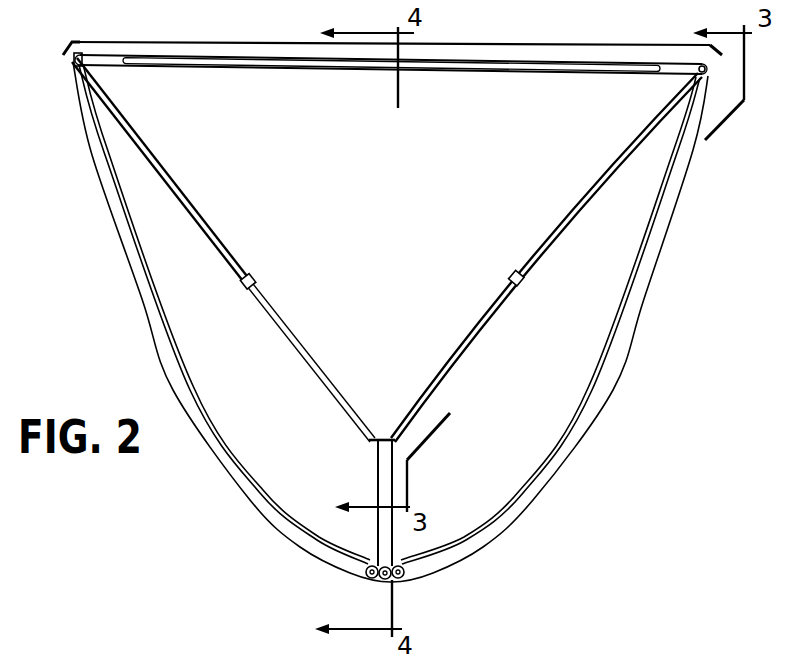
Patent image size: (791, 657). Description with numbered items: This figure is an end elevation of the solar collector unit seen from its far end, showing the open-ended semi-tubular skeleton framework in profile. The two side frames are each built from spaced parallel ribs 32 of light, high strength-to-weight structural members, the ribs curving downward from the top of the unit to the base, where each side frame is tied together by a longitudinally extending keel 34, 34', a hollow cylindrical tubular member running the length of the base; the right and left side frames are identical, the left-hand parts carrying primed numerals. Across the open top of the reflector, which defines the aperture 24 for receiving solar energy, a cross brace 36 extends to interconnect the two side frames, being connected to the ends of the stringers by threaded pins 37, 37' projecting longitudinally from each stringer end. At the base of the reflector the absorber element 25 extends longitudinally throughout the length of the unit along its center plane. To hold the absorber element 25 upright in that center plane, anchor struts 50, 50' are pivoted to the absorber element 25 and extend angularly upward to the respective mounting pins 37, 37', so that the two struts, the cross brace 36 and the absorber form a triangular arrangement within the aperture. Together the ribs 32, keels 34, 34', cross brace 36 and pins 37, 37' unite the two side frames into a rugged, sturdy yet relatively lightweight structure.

The aperture 24 is at (540, 43).
The absorber element 25 is at (396, 443).
The ribs 32 is at (140, 303).
The keel 34 is at (369, 585).
The keel 34' is at (418, 585).
The cross brace 36 is at (473, 72).
The threaded pin 37 is at (71, 39).
The threaded pin 37' is at (727, 73).
The anchor strut 50 is at (223, 250).
The anchor strut 50' is at (546, 257).